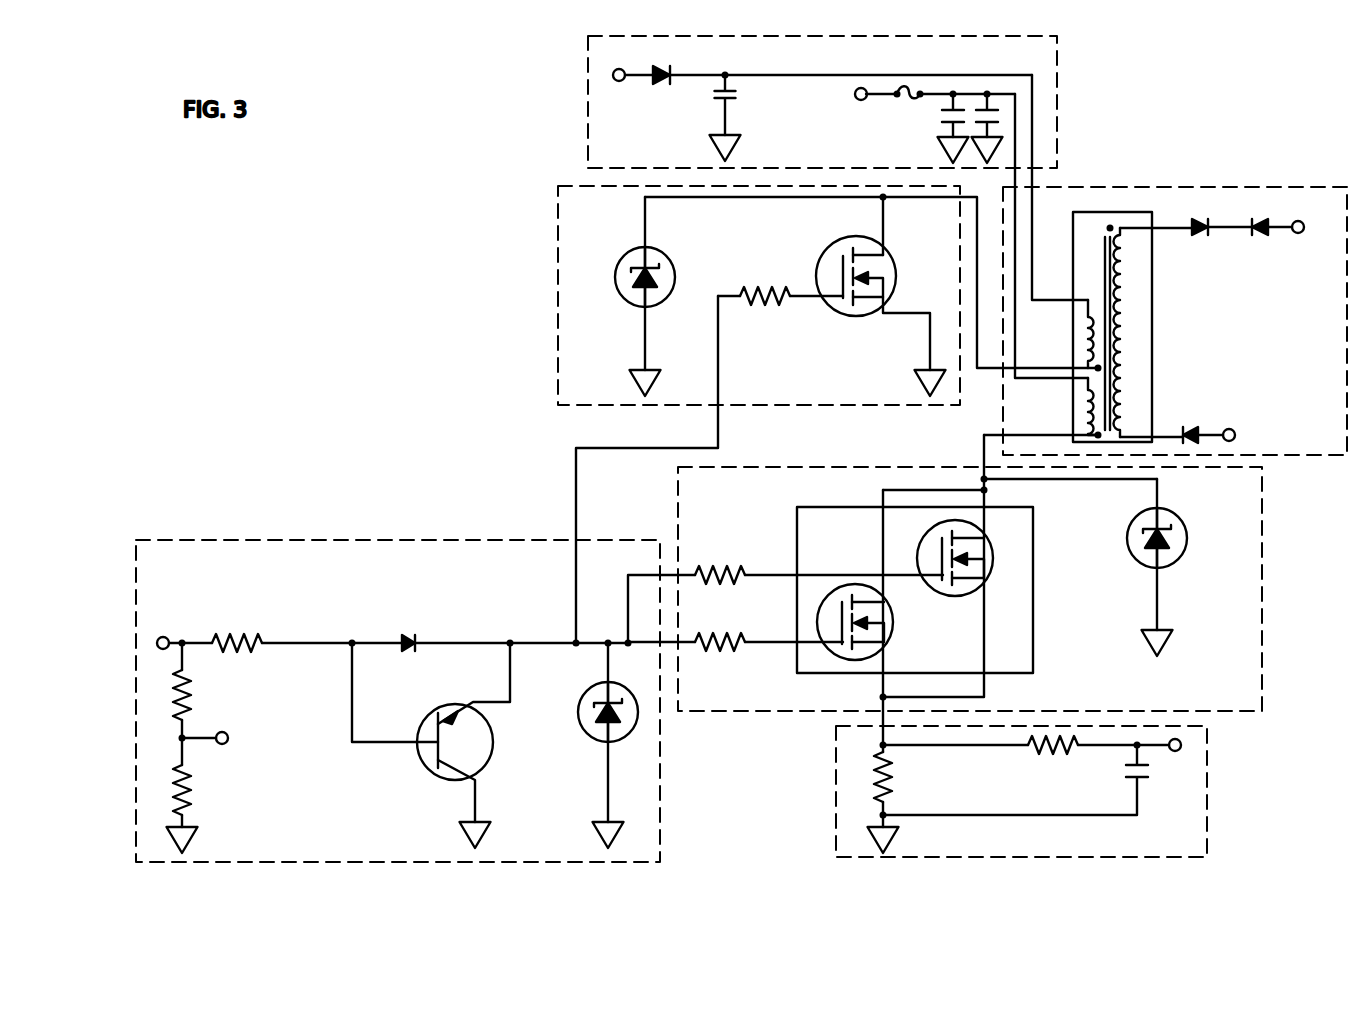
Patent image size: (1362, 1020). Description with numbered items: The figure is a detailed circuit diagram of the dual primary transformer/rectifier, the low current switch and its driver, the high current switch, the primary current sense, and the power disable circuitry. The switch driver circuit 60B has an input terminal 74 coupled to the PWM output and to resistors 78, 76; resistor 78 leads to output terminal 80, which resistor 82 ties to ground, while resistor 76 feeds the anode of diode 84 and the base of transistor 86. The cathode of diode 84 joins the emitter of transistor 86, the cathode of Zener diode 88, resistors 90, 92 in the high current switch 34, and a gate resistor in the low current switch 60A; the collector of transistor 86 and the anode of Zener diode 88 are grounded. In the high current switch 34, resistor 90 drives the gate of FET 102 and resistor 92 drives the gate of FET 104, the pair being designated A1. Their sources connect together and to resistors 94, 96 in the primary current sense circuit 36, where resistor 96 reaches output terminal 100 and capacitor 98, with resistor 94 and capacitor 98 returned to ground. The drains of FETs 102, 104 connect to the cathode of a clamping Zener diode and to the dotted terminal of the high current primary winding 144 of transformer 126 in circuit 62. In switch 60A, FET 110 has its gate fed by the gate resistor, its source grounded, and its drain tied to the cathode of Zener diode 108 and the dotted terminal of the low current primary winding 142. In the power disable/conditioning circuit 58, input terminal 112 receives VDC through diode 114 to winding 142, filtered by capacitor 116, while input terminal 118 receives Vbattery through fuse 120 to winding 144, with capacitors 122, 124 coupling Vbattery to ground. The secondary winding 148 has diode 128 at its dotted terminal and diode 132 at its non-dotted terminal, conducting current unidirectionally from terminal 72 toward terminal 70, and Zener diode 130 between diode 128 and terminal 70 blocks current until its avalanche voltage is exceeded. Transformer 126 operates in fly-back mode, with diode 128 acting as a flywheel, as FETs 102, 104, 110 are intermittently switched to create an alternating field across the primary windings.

The high current switch 34 is at (840, 466).
The primary current sense circuit 36 is at (835, 800).
The power disable/conditioning circuit 58 is at (1060, 72).
The low current switch 60A is at (555, 252).
The switch driver circuit 60B is at (287, 538).
The dual primary transformer/rectifier circuit 62 is at (1178, 185).
The terminal 70 is at (1302, 236).
The terminal 72 is at (1230, 426).
The input terminal 74 is at (165, 636).
The resistor 76 is at (240, 640).
The resistor 78 is at (192, 695).
The output terminal 80 is at (230, 738).
The resistor 82 is at (194, 790).
The diode 84 is at (403, 633).
The transistor 86 is at (455, 775).
The Zener diode 88 is at (595, 728).
The resistor 90 is at (713, 653).
The resistor 92 is at (712, 565).
The resistor 94 is at (893, 780).
The resistor 96 is at (1040, 752).
The capacitor 98 is at (1120, 770).
The output terminal 100 is at (1177, 752).
The field effect transistor 102 is at (875, 622).
The field effect transistor 104 is at (973, 563).
The Zener diode 108 is at (662, 275).
The field effect transistor 110 is at (840, 268).
The input terminal 112 is at (619, 82).
The diode 114 is at (662, 72).
The capacitor 116 is at (732, 98).
The input terminal 118 is at (857, 100).
The fuse 120 is at (907, 86).
The capacitor 122 is at (945, 115).
The capacitor 124 is at (990, 113).
The transformer 126 is at (1152, 342).
The diode 128 is at (1200, 238).
The Zener diode 130 is at (1252, 245).
The diode 132 is at (1190, 425).
The low current primary winding 142 is at (1088, 333).
The high current primary winding 144 is at (1088, 400).
The secondary winding 148 is at (1120, 260).
The FET pair A1 is at (1033, 575).